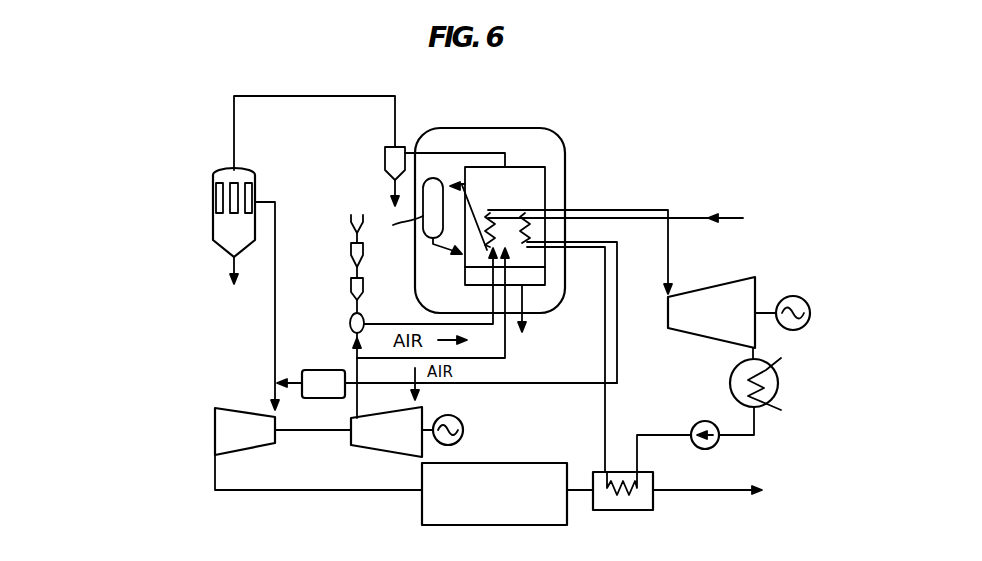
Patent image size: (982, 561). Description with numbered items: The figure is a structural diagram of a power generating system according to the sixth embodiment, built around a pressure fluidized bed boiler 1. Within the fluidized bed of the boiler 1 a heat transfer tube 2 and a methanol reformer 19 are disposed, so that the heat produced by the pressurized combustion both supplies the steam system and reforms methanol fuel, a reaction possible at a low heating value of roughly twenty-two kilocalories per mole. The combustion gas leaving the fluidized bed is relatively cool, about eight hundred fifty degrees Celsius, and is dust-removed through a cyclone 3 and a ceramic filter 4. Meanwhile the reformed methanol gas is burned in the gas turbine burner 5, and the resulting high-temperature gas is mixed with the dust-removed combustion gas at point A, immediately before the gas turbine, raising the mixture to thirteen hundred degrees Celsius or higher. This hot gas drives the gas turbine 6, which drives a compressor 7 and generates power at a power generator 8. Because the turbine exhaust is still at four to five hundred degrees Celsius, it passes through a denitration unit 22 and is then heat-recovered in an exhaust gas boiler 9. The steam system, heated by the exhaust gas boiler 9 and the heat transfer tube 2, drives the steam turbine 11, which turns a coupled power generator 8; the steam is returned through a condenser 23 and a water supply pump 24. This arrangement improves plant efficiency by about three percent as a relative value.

The pressure fluidized bed boiler 1 is at (535, 167).
The heat transfer tube 2 is at (560, 310).
The cyclone 3 is at (398, 147).
The ceramic filter 4 is at (218, 172).
The gas turbine burner 5 is at (315, 370).
The gas turbine 6 is at (226, 408).
The compressor 7 is at (373, 446).
The power generator 8 is at (463, 430).
The exhaust gas boiler 9 is at (636, 510).
The steam turbine 11 is at (731, 277).
The methanol reformer 19 is at (533, 230).
The denitration unit 22 is at (540, 463).
The condenser 23 is at (780, 383).
The water supply pump 24 is at (718, 440).